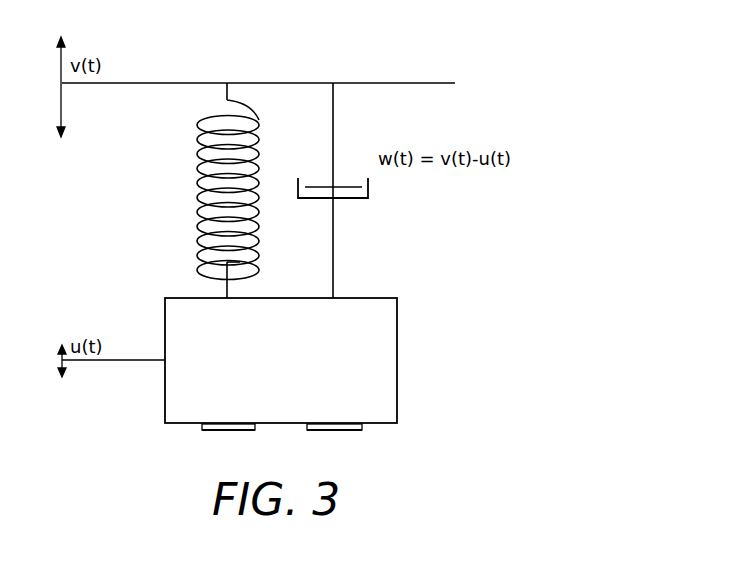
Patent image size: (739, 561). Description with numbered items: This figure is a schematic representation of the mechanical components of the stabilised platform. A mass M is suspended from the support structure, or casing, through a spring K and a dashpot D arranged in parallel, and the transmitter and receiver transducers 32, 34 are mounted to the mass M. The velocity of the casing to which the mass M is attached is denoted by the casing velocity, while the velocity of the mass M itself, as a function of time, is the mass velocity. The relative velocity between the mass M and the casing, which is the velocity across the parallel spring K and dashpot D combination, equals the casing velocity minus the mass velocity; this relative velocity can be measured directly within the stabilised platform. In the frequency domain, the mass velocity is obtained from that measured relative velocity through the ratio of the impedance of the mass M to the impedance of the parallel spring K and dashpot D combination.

The spring K is at (213, 190).
The dashpot D is at (346, 190).
The mass M is at (281, 360).
The transmitter transducer 32 is at (204, 430).
The receiver transducer 34 is at (362, 430).